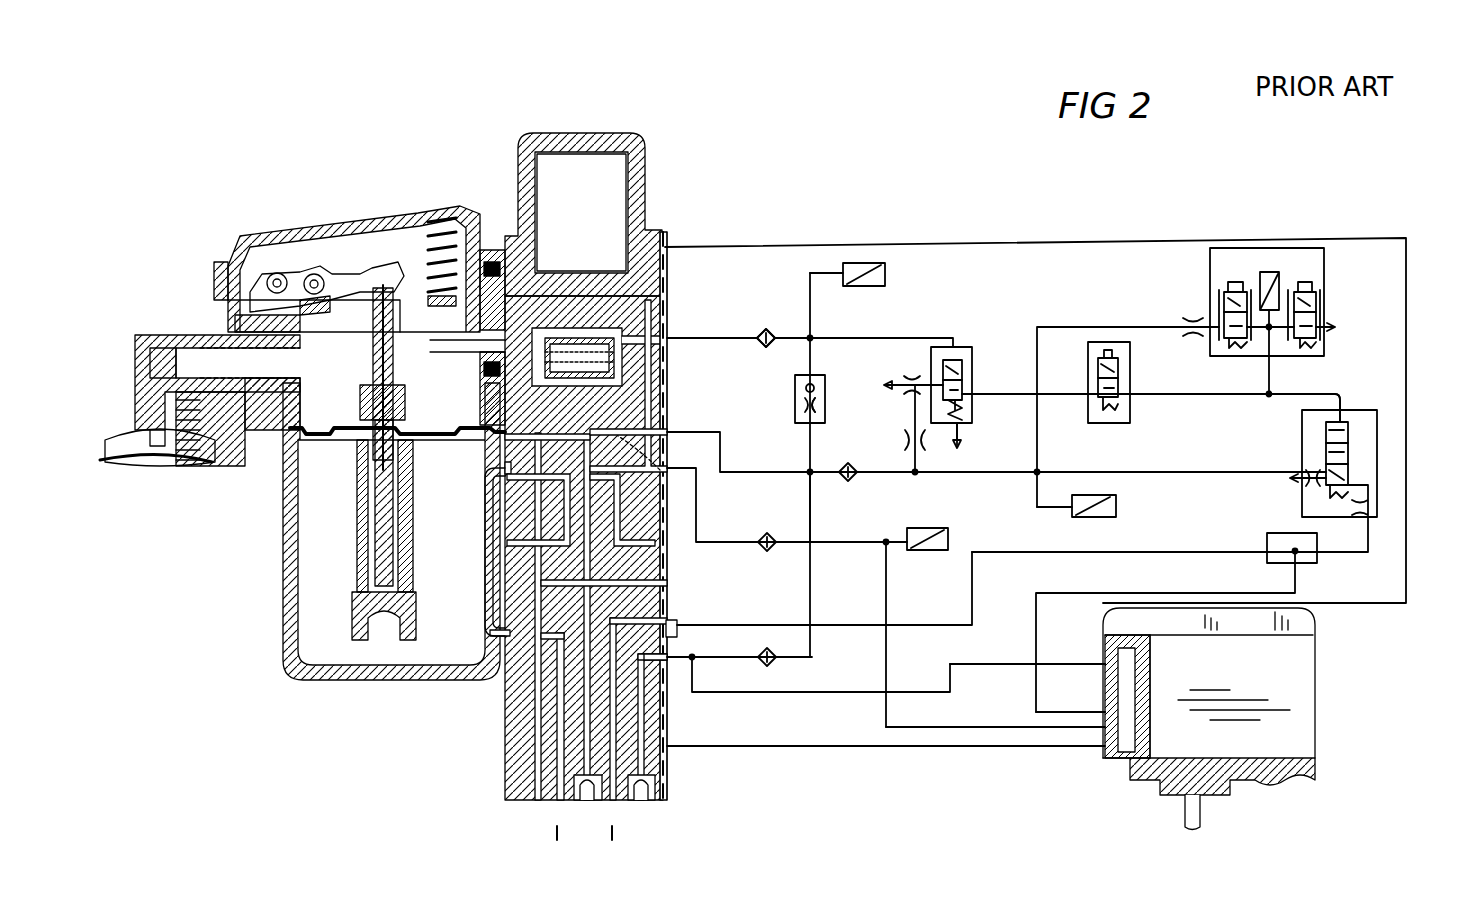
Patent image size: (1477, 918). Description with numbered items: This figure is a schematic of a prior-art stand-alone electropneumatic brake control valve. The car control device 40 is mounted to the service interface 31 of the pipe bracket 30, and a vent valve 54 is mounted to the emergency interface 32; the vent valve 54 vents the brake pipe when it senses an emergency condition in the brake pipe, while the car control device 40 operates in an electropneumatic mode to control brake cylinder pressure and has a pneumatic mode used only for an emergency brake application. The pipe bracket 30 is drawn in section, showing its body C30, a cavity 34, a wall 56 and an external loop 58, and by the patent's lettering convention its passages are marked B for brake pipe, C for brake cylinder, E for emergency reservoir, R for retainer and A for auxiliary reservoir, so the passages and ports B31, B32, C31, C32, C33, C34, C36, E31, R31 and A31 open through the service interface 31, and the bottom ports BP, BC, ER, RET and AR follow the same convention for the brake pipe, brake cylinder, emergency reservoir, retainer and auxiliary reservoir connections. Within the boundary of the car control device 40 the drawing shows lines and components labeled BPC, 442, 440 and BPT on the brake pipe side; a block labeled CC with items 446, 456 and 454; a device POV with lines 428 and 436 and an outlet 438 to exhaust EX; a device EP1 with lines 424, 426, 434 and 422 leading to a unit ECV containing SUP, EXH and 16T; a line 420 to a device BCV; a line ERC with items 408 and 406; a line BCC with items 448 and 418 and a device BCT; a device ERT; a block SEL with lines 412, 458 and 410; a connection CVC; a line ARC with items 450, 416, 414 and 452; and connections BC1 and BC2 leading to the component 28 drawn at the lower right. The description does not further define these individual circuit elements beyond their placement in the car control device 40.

The vent valve 54 is at (262, 238).
The emergency interface 32 is at (497, 244).
The pipe bracket 30 is at (643, 177).
The housing cavity 34 is at (600, 212).
The service interface 31 is at (666, 250).
The car control device 40 is at (1032, 245).
The brake pipe port B31 is at (668, 336).
The brake pipe passage B32 is at (500, 352).
The brake pipe check valve BPC is at (749, 331).
The check valve 442 is at (771, 330).
The brake pipe line 440 is at (829, 338).
The brake pipe transducer BPT is at (871, 275).
The pressure operated valve POV is at (965, 385).
The supply line 424 is at (1106, 326).
The choke 426 is at (1194, 318).
The 16T transducer 16T is at (1270, 282).
The supply magnet valve SUP is at (1233, 309).
The exhaust magnet valve EXH is at (1326, 309).
The electronic control valve ECV is at (1289, 302).
The exhaust EX is at (897, 385).
The control line 446 is at (810, 370).
The control chamber CC is at (818, 388).
The orifice 456 is at (806, 388).
The choke 454 is at (826, 406).
The control line 428 is at (1010, 394).
The electro-pneumatic valve EP1 is at (1129, 378).
The control line 434 is at (1217, 394).
The transducer line 422 is at (1271, 384).
The line to BCV 420 is at (1322, 395).
The brake cylinder valve BCV is at (1320, 450).
The emergency reservoir port E31 is at (668, 432).
The choke 436 is at (912, 432).
The exhaust 438 is at (935, 447).
The port C33 is at (668, 468).
The emergency reservoir control line ERC is at (996, 453).
The check valve 408 is at (853, 480).
The line 406 is at (1000, 478).
The passage C31 is at (618, 436).
The passage C34 is at (508, 436).
The passage C36 is at (508, 464).
The line 448 is at (812, 512).
The brake cylinder control line BCC is at (787, 506).
The brake cylinder transducer BCT is at (949, 540).
The emergency reservoir transducer ERT is at (1097, 507).
The check valve 418 is at (769, 552).
The selector SEL is at (1271, 535).
The line 412 is at (1155, 552).
The selector junction 458 is at (1267, 561).
The line 410 is at (1366, 560).
The external passage 58 is at (493, 554).
The retainer port R31 is at (669, 603).
The control valve connection CVC is at (693, 616).
The auxiliary reservoir port A31 is at (672, 656).
The auxiliary reservoir control line ARC is at (739, 642).
The line 416 is at (888, 648).
The line 414 is at (1156, 593).
The check valve 450 is at (776, 666).
The line 452 is at (856, 694).
The brake cylinder line 2 BC2 is at (995, 715).
The brake cylinder line 1 BC1 is at (1070, 702).
The reservoir 28 is at (1317, 678).
The passage C32 is at (506, 633).
The manifold body C30 is at (558, 736).
The manifold 56 is at (506, 770).
The brake pipe port BP is at (534, 634).
The brake cylinder port BC is at (554, 743).
The emergency reservoir port ER is at (586, 636).
The retainer port RET is at (627, 736).
The auxiliary reservoir port AR is at (645, 745).